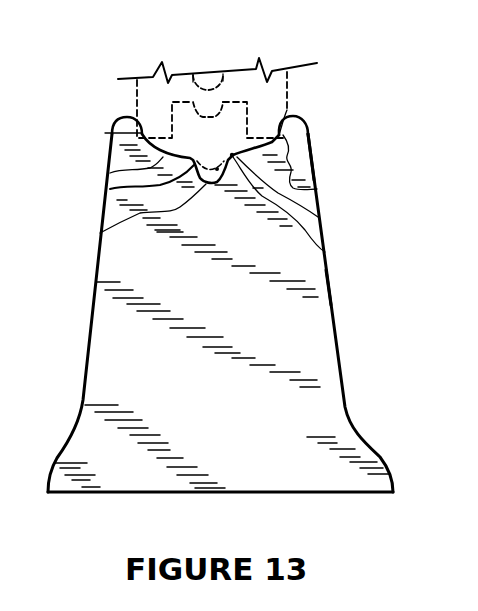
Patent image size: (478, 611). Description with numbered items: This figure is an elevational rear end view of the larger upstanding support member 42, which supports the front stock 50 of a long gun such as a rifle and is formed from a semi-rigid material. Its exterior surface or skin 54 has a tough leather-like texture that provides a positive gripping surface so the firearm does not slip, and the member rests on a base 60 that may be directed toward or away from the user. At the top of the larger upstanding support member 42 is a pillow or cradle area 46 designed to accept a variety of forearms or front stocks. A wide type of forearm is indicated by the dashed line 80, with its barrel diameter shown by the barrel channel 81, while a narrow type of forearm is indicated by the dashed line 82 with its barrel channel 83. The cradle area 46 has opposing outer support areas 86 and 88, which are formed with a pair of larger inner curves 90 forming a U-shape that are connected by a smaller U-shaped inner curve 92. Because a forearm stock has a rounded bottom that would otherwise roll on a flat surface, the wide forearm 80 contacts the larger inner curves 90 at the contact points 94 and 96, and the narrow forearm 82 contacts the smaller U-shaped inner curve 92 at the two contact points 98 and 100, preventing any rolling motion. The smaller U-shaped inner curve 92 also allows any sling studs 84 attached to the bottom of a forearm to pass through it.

The larger upstanding support member 42 is at (222, 297).
The pillow or cradle area 46 is at (166, 127).
The front stock 50 is at (277, 82).
The exterior surface or skin 54 is at (328, 284).
The base 60 is at (343, 493).
The wide forearm 80 is at (288, 101).
The barrel channel 81 is at (205, 77).
The narrow forearm 82 is at (292, 163).
The barrel channel 83 is at (214, 108).
The sling studs 84 is at (323, 252).
The outer support area 86 is at (304, 127).
The outer support area 88 is at (115, 128).
The larger inner curves 90 is at (110, 173).
The smaller U-shaped inner curve 92 is at (100, 233).
The contact point 94 is at (105, 133).
The contact point 96 is at (309, 144).
The contact point 98 is at (110, 189).
The contact point 100 is at (318, 217).